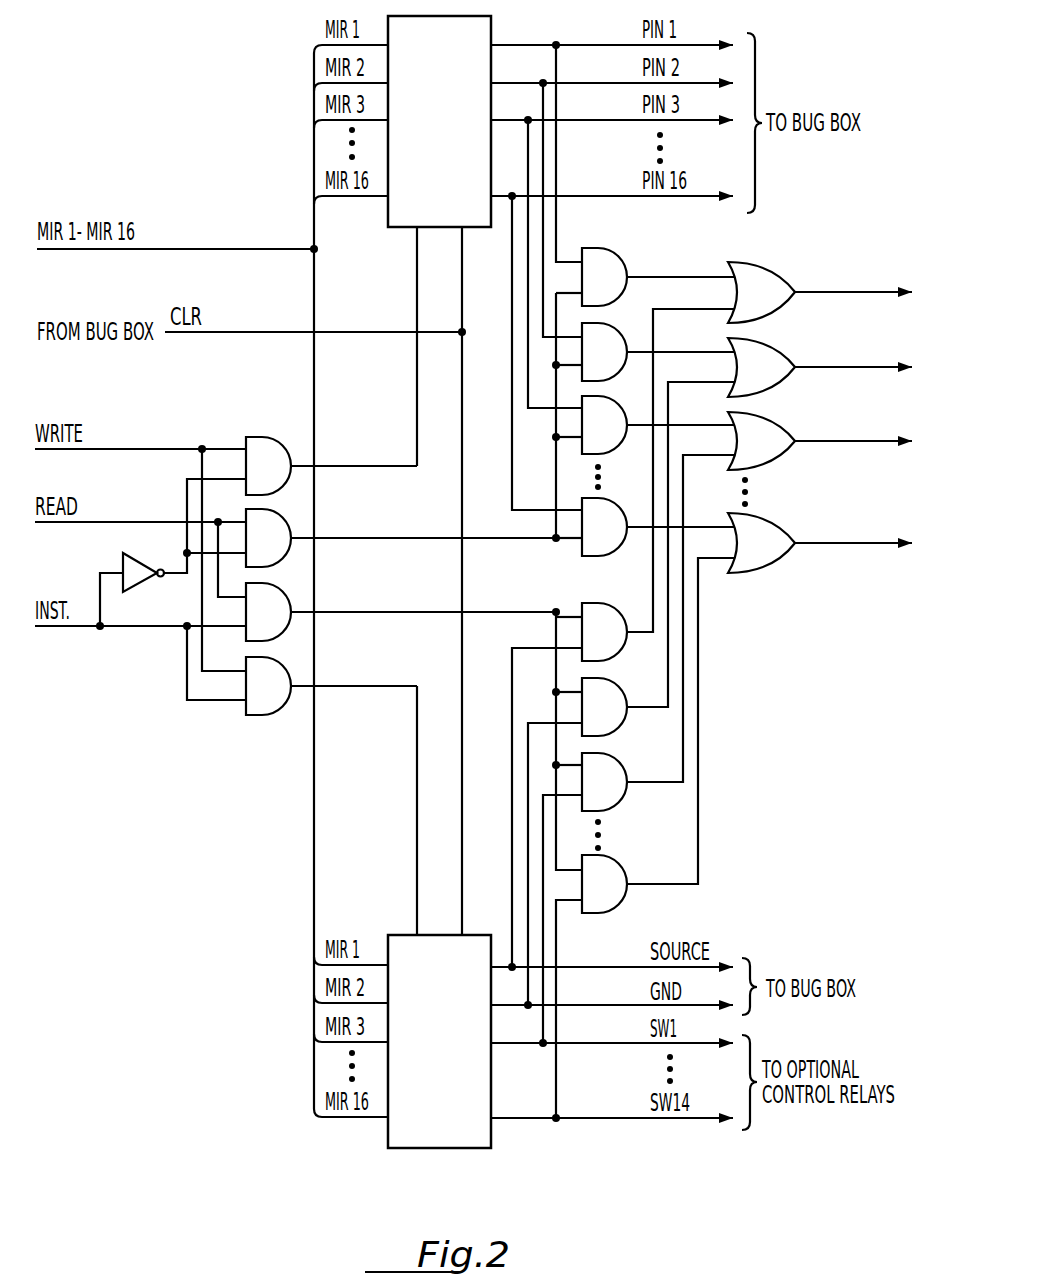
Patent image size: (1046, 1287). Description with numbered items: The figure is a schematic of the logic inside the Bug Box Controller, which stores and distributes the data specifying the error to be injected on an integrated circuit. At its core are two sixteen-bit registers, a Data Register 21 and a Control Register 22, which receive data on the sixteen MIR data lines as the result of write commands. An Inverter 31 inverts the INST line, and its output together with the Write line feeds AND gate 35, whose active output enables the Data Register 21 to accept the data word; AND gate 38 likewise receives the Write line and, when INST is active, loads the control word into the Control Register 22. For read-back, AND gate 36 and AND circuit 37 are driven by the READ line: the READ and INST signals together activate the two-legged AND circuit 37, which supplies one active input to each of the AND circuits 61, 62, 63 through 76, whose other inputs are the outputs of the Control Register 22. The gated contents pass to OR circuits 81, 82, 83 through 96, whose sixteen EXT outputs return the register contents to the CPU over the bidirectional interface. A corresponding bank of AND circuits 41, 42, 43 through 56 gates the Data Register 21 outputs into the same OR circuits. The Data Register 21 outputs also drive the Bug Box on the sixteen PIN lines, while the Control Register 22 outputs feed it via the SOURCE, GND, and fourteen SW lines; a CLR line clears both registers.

The Data Register 21 is at (397, 226).
The Control Register 22 is at (486, 1132).
The Inverter 31 is at (134, 577).
The AND gate 35 is at (267, 437).
The AND gate 36 is at (277, 514).
The AND circuit 37 is at (277, 590).
The AND gate 38 is at (264, 712).
The AND circuit 41 is at (623, 262).
The AND circuit 42 is at (614, 338).
The AND circuit 43 is at (614, 411).
The AND circuit 56 is at (606, 515).
The AND circuit 61 is at (613, 604).
The AND circuit 62 is at (618, 678).
The AND circuit 63 is at (622, 752).
The AND circuit 76 is at (623, 855).
The OR circuit 81 is at (770, 272).
The OR circuit 82 is at (772, 349).
The OR circuit 83 is at (772, 424).
The OR circuit 96 is at (771, 525).